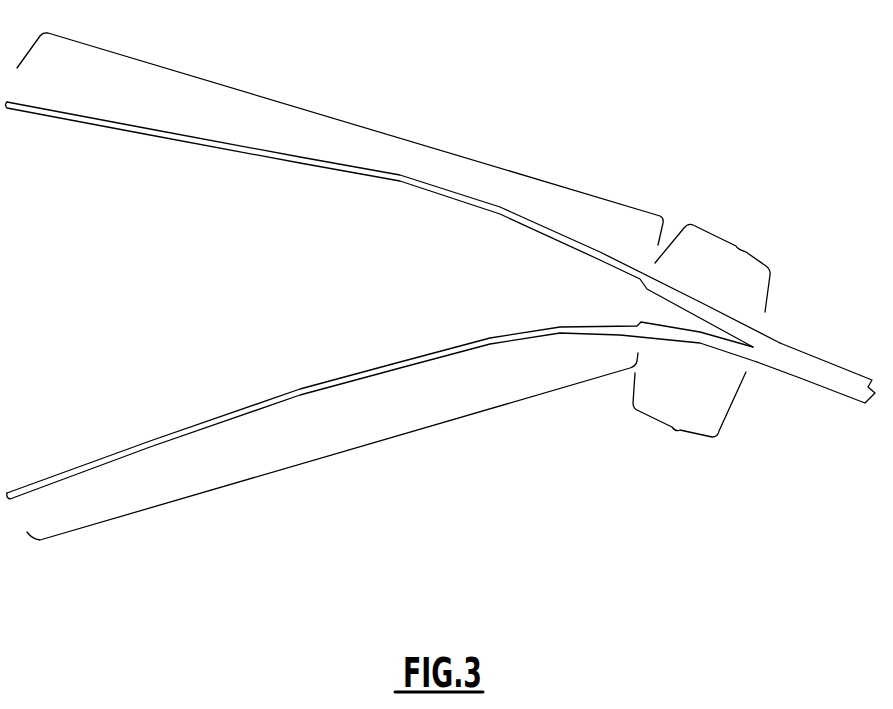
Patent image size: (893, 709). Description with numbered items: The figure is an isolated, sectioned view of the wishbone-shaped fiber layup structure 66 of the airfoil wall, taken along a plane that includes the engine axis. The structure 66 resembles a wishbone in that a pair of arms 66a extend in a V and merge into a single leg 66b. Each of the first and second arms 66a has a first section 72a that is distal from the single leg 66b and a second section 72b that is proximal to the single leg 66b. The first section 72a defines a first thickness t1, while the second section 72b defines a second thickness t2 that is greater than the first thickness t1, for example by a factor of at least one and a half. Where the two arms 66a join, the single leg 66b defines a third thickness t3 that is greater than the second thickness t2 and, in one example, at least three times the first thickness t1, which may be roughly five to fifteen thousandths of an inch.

The wishbone-shaped fiber layup structure 66 is at (441, 310).
The arms 66a is at (438, 177).
The single leg 66b is at (782, 366).
The first section 72a is at (362, 122).
The second section 72b is at (740, 247).
The first thickness t1 is at (383, 151).
The second thickness t2 is at (681, 372).
The third thickness t3 is at (790, 417).